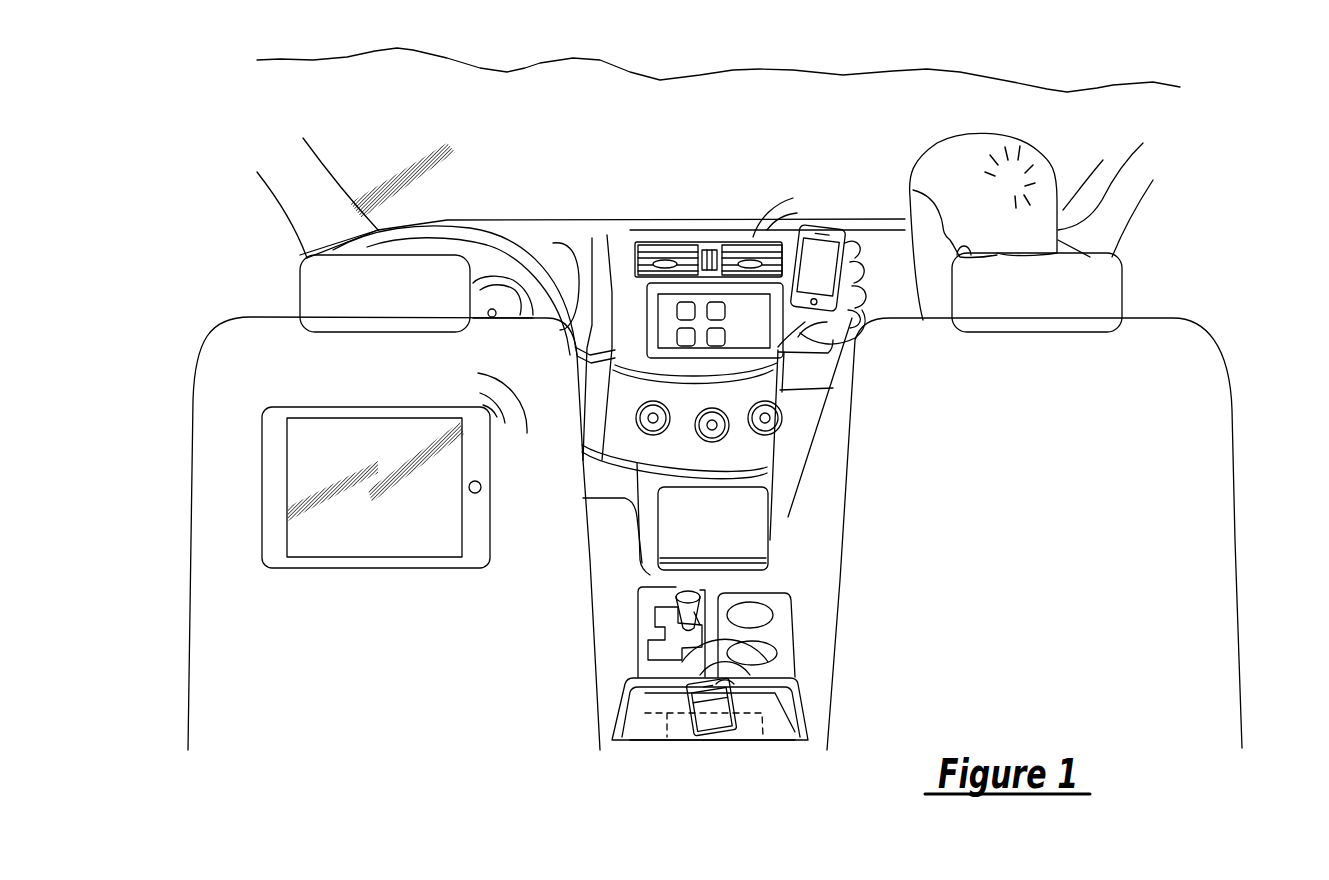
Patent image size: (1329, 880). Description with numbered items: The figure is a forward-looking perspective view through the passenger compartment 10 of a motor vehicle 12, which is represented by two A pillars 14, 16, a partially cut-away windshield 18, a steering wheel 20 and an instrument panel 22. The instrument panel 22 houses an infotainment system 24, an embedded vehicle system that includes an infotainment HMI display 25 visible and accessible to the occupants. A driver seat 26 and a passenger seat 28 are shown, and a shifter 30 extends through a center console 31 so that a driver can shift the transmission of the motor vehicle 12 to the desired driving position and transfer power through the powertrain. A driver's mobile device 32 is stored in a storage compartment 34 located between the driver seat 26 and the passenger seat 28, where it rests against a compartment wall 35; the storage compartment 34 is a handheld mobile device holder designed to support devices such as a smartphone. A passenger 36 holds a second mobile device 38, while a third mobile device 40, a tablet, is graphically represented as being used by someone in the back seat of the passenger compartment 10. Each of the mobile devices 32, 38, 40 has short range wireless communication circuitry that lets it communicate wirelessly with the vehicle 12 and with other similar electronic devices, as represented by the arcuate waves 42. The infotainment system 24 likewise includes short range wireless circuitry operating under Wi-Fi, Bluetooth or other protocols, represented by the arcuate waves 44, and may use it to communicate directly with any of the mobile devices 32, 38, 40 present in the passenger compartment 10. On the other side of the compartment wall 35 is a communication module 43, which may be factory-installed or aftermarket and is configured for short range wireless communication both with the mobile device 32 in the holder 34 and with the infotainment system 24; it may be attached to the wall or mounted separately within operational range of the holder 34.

The passenger compartment 10 is at (983, 580).
The motor vehicle 12 is at (1131, 206).
The A pillar 14 is at (1100, 173).
The A pillar 16 is at (323, 168).
The windshield 18 is at (787, 69).
The steering wheel 20 is at (500, 248).
The instrument panel 22 is at (583, 253).
The infotainment system 24 is at (640, 335).
The infotainment HMI display 25 is at (737, 343).
The driver seat 26 is at (193, 408).
The passenger seat 28 is at (1240, 530).
The shifter 30 is at (677, 593).
The center console 31 is at (638, 600).
The driver's mobile device 32 is at (627, 717).
The storage compartment 34 is at (800, 723).
The compartment wall 35 is at (803, 693).
The passenger 36 is at (1143, 143).
The second mobile device 38 is at (820, 227).
The third mobile device 40 is at (388, 562).
The arcuate waves 42 is at (810, 200).
The communication module 43 is at (613, 703).
The arcuate waves 44 is at (608, 243).